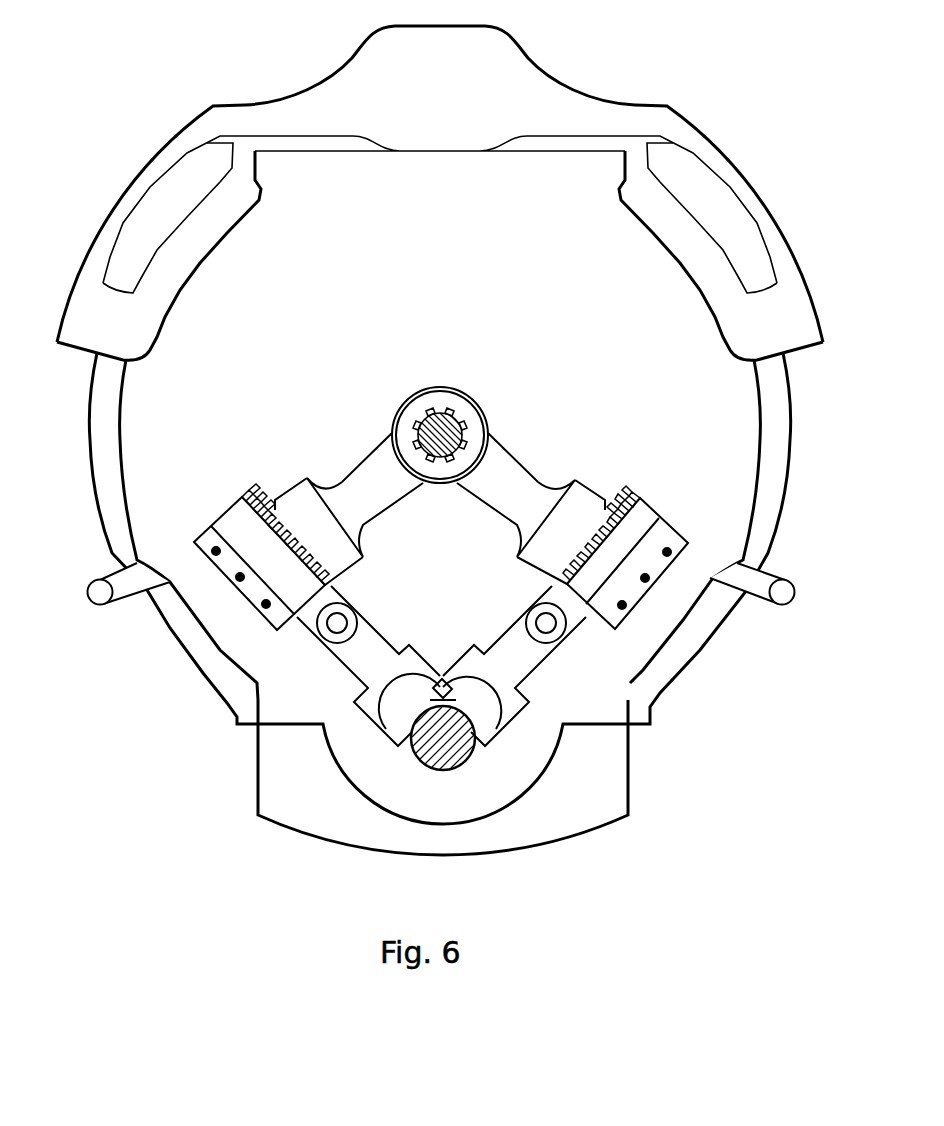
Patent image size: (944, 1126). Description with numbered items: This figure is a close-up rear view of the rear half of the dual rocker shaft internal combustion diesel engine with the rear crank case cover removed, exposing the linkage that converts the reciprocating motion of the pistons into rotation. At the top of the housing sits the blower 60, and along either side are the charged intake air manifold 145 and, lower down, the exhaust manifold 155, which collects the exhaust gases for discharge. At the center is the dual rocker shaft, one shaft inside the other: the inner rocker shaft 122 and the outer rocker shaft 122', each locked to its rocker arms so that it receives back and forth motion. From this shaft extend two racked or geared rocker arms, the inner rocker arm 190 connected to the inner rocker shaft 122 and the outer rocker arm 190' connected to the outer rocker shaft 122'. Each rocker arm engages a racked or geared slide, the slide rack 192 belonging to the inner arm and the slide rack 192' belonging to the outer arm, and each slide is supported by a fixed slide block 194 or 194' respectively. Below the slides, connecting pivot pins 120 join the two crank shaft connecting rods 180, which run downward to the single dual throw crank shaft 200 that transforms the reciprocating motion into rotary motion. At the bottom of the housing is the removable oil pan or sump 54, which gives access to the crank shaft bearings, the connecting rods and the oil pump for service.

The blower 60 is at (421, 73).
The charged intake air manifold 145 is at (127, 337).
The inner rocker shaft 122 is at (439, 416).
The outer rocker shaft 122' is at (486, 420).
The inner rocker arm with racks 190 is at (520, 495).
The outer rocker arm with rack 190' is at (365, 491).
The slide rack 192 is at (598, 513).
The slide rack 192' is at (288, 506).
The fixed slide block 194 is at (647, 549).
The fixed slide block 194' is at (237, 557).
The connecting pivot pins 120 is at (355, 612).
The crank shaft connecting rods 180 is at (380, 643).
The exhaust manifold 155 is at (88, 600).
The crank shaft 200 is at (425, 766).
The oil pan or sump 54 is at (600, 810).